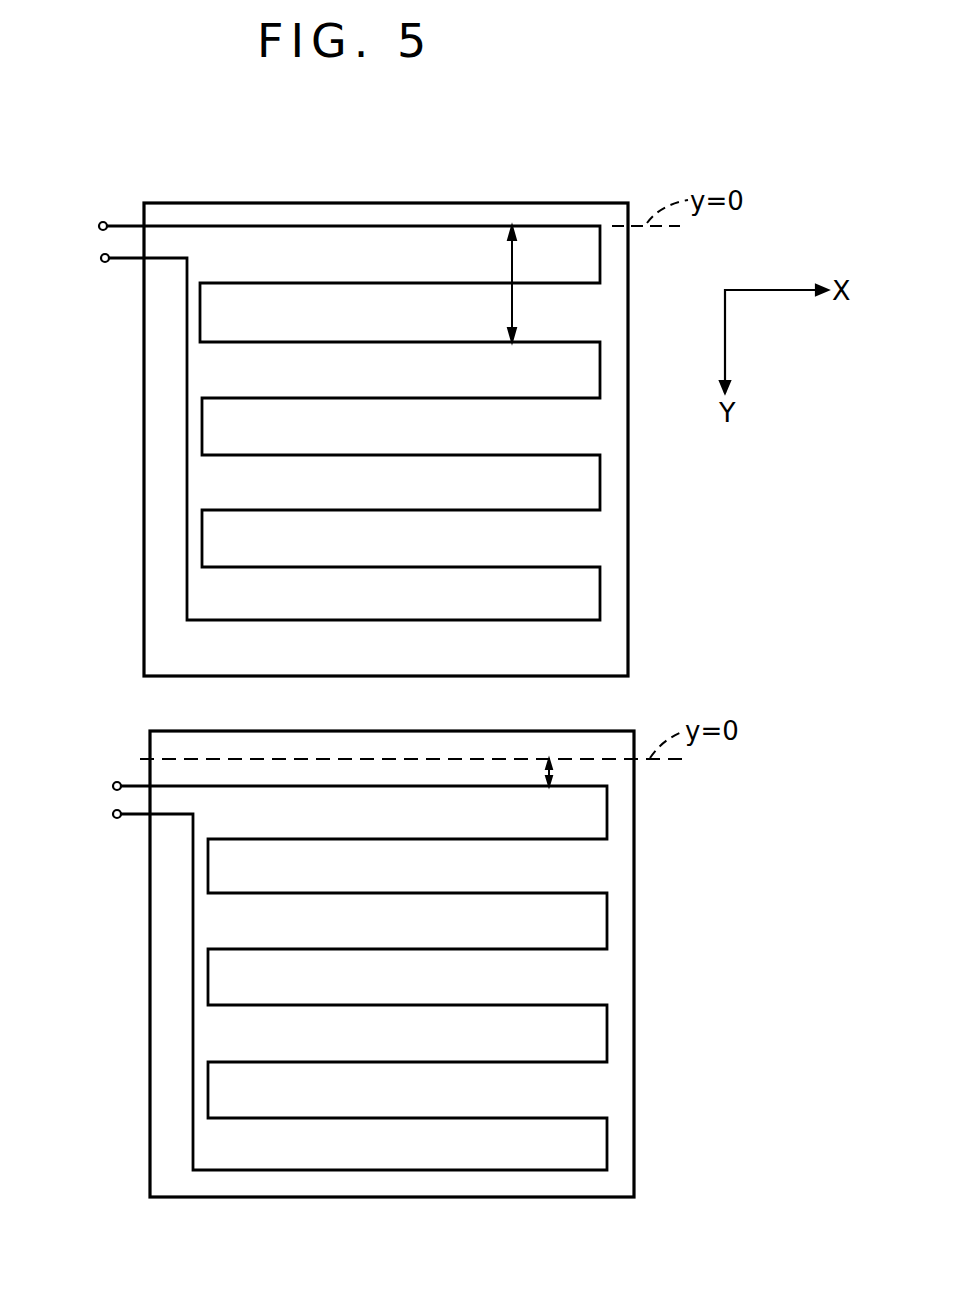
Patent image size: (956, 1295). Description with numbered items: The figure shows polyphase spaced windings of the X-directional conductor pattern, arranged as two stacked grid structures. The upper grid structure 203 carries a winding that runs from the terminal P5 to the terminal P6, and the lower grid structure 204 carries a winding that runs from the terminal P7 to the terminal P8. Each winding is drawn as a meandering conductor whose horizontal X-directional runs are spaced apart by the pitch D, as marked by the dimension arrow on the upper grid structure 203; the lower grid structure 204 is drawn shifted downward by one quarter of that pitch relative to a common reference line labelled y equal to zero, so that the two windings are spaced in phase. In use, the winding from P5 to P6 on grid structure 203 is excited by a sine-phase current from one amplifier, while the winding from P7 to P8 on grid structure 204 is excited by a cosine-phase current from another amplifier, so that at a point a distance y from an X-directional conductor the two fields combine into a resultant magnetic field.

The grid structure 203 is at (512, 212).
The grid structure 204 is at (578, 742).
The winding terminal P5 is at (99, 226).
The winding terminal P6 is at (101, 258).
The winding terminal P7 is at (113, 786).
The winding terminal P8 is at (113, 814).
The electrode pitch D is at (512, 303).